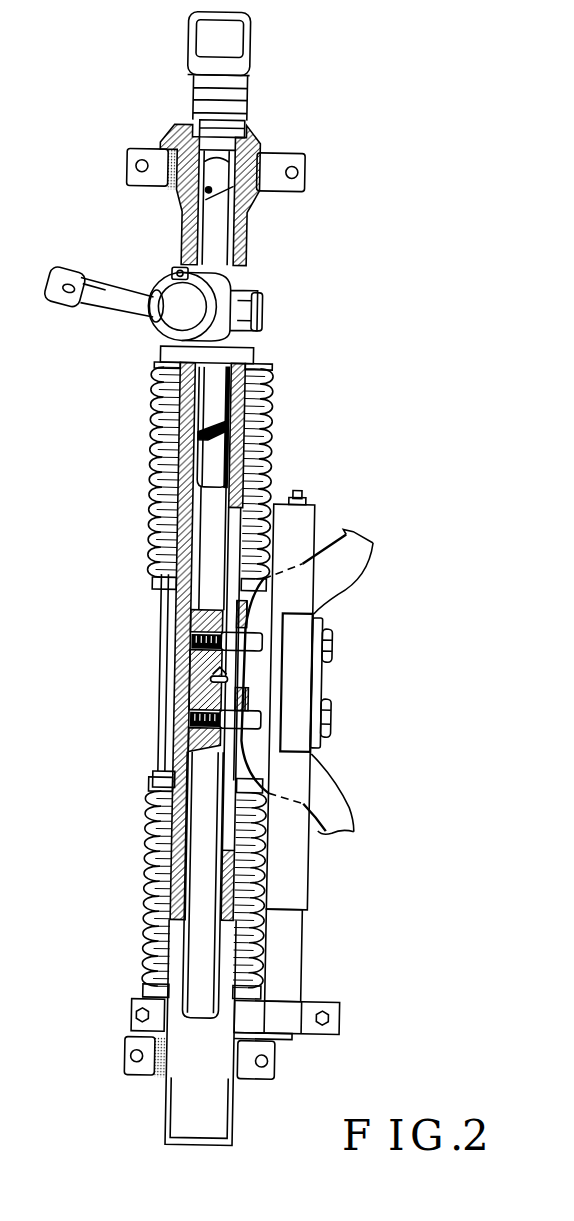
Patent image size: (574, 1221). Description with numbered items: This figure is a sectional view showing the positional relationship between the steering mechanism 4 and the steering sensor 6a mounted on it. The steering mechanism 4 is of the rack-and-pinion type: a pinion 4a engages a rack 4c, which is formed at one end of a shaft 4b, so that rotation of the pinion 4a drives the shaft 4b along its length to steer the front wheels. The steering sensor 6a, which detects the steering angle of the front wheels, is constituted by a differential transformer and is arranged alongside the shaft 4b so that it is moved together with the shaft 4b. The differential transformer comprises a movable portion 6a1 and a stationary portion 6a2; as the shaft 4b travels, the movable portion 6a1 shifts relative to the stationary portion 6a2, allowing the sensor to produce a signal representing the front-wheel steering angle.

The steering mechanism 4 is at (158, 656).
The pinion 4a is at (113, 312).
The shaft 4b is at (200, 556).
The rack 4c is at (203, 458).
The steering sensor 6a is at (316, 868).
The movable portion 6a1 is at (302, 893).
The stationary portion 6a2 is at (298, 942).